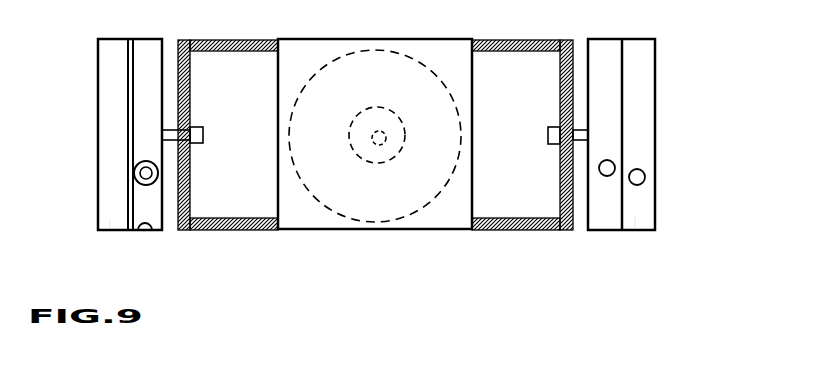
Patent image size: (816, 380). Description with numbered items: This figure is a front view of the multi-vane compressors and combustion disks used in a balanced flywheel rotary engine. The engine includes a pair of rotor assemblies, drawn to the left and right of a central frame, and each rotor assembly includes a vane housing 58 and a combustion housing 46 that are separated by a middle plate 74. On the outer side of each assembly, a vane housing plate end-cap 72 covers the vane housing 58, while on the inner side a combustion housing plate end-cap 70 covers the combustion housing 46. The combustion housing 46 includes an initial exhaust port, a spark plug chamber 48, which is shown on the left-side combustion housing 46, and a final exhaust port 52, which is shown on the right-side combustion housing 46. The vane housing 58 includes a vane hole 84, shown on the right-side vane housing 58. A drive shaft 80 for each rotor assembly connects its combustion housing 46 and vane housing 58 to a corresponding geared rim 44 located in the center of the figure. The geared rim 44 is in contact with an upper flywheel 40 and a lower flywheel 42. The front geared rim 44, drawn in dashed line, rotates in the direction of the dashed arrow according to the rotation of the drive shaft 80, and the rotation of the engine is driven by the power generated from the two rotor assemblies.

The upper flywheel 40 is at (247, 40).
The lower flywheel 42 is at (245, 232).
The geared rim 44 is at (190, 160).
The combustion housing 46 is at (145, 232).
The spark plug chamber 48 is at (137, 165).
The final exhaust port 52 is at (610, 160).
The vane housing 58 is at (110, 220).
The combustion housing plate end-cap 70 is at (180, 57).
The vane housing plate end-cap 72 is at (98, 103).
The middle plate 74 is at (135, 39).
The drive shaft 80 is at (200, 128).
The vane hole 84 is at (637, 169).